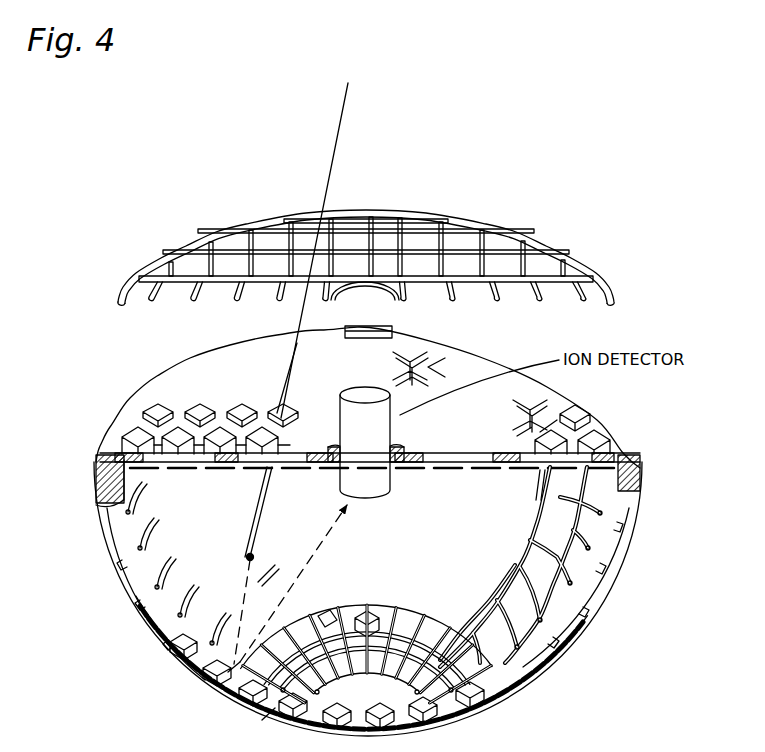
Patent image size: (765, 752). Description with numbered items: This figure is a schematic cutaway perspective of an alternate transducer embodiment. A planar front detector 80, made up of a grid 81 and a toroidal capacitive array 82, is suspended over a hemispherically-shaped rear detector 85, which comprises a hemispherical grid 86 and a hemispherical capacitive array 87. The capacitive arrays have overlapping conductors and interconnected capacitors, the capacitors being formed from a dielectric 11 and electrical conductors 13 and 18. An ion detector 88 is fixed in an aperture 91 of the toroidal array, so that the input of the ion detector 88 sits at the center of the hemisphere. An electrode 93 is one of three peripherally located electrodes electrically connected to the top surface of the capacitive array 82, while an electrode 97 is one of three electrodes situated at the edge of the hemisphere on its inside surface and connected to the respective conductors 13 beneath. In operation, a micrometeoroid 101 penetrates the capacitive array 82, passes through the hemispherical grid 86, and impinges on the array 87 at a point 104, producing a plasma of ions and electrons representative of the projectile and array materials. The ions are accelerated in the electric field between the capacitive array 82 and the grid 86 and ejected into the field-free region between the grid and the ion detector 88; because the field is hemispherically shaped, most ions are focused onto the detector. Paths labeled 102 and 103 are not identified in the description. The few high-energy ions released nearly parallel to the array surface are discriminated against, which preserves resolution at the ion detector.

The planar front detector 80 is at (572, 205).
The grid 81 is at (578, 256).
The electrode 93 is at (393, 330).
The capacitive array 82 is at (218, 372).
The electrical conductor 18 is at (200, 470).
The ion detector 88 is at (348, 387).
The aperture 91 is at (402, 447).
The electrical conductor 13 is at (578, 427).
The capacitive array 87 is at (598, 606).
The electrode 97 is at (100, 502).
The grid 86 is at (575, 584).
The rear detector 85 is at (525, 545).
The dielectric 11 is at (549, 466).
The micrometeoroid 101 is at (246, 558).
The ion path 102 is at (238, 605).
The ion path 103 is at (320, 560).
The point 104 is at (229, 680).